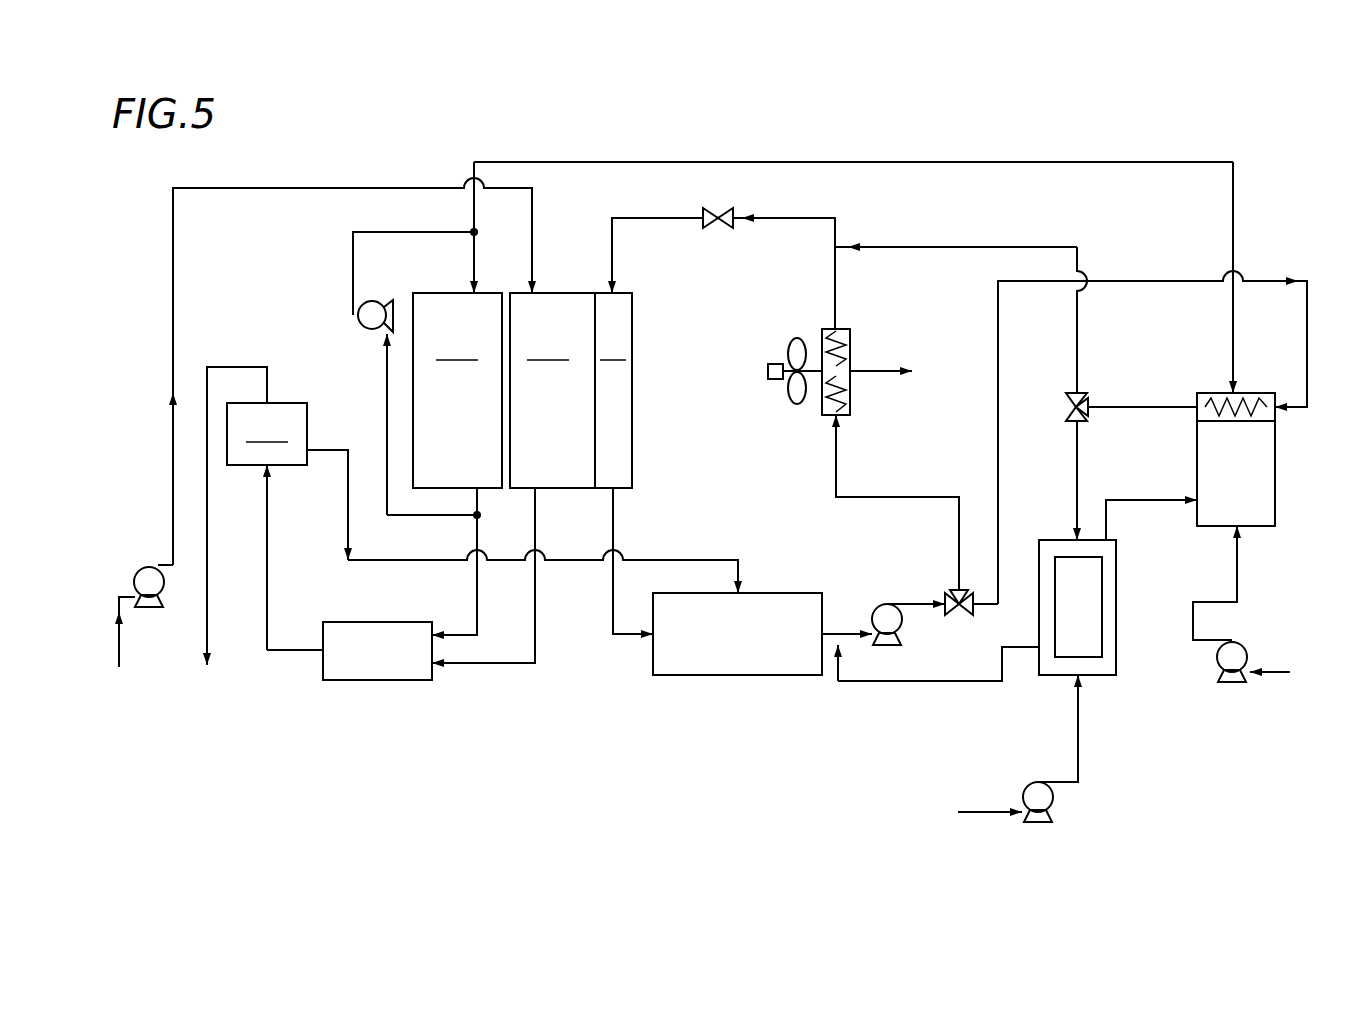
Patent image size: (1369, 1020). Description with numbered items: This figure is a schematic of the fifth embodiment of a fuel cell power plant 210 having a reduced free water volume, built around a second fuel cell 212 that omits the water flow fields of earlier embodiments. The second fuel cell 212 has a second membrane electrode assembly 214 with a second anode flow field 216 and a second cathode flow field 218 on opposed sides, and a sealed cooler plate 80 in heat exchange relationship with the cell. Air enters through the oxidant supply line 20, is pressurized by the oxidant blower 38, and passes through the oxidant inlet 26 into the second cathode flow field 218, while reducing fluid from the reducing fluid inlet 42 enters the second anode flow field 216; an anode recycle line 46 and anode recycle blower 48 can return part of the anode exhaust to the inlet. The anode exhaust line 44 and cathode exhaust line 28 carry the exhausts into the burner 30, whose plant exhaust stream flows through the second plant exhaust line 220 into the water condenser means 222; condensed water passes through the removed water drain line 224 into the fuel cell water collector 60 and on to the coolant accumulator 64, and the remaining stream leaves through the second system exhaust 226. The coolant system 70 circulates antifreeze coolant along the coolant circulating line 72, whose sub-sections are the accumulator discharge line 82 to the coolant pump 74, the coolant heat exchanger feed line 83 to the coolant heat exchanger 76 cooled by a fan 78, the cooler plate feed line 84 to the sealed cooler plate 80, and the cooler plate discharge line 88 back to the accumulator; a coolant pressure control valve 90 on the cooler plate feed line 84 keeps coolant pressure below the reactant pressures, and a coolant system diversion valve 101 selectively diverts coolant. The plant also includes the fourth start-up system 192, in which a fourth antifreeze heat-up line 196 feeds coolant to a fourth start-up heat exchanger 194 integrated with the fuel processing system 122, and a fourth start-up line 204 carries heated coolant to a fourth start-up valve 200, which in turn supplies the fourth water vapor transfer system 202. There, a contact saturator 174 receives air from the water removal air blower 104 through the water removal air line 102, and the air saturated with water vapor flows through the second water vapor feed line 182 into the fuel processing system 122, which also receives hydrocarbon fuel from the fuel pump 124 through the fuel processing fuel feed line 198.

The oxidant supply line 20 is at (119, 634).
The oxidant inlet 26 is at (173, 227).
The cathode exhaust line 28 is at (535, 620).
The burner 30 is at (372, 632).
The oxidant blower 38 is at (147, 571).
The reducing fluid inlet 42 is at (703, 162).
The anode exhaust line 44 is at (477, 578).
The anode recycle line 46 is at (386, 400).
The anode recycle blower 48 is at (372, 310).
The fuel cell water collector 60 is at (504, 560).
The coolant accumulator 64 is at (817, 593).
The coolant system 70 is at (846, 572).
The coolant circulating line 72 is at (836, 461).
The coolant pump 74 is at (888, 600).
The coolant heat exchanger 76 is at (846, 346).
The fan 78 is at (768, 372).
The sealed cooler plate 80 is at (613, 390).
The accumulator discharge line 82 is at (850, 640).
The coolant heat exchanger feed line 83 is at (911, 608).
The cooler plate feed line 84 is at (796, 218).
The cooler plate discharge line 88 is at (613, 528).
The coolant pressure control valve 90 is at (724, 230).
The coolant system diversion valve 101 is at (965, 588).
The water removal air line 102 is at (1078, 740).
The water removal air blower 104 is at (1047, 788).
The fuel processing system 122 is at (1248, 516).
The fuel pump 124 is at (1238, 650).
The contact saturator 174 is at (1116, 600).
The second water vapor feed line 182 is at (1138, 498).
The fourth start-up system 192 is at (1187, 297).
The fourth start-up heat exchanger 194 is at (1262, 393).
The fourth antifreeze heat-up line 196 is at (998, 320).
The fuel processing fuel feed line 198 is at (1193, 620).
The fourth start-up valve 200 is at (1065, 400).
The fourth water vapor transfer system 202 is at (1050, 508).
The fourth start-up line 204 is at (1142, 407).
The fuel cell power plant 210 is at (1262, 160).
The second fuel cell 212 is at (574, 260).
The second membrane electrode assembly 214 is at (508, 296).
The second anode flow field 216 is at (457, 390).
The second cathode flow field 218 is at (552, 390).
The second plant exhaust line 220 is at (267, 588).
The water condenser means 222 is at (267, 434).
The removed water drain line 224 is at (348, 512).
The second system exhaust 226 is at (207, 530).